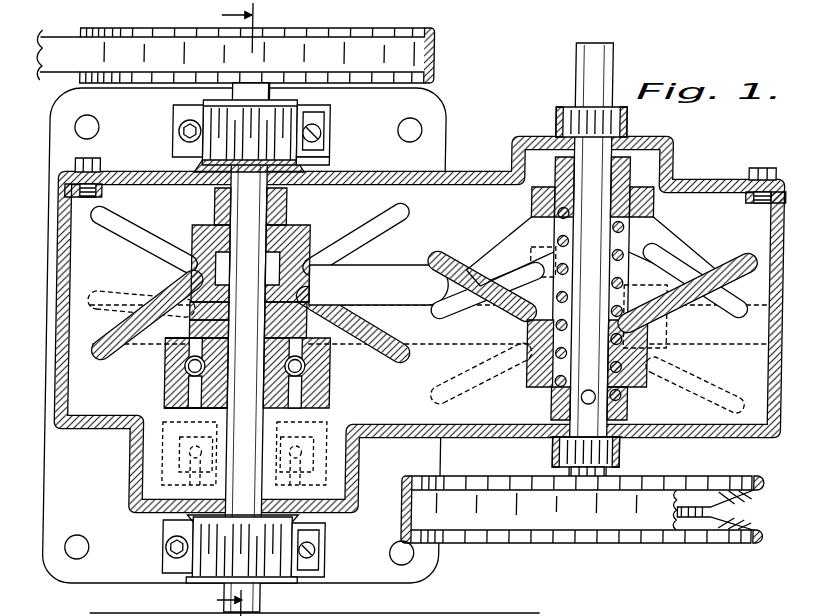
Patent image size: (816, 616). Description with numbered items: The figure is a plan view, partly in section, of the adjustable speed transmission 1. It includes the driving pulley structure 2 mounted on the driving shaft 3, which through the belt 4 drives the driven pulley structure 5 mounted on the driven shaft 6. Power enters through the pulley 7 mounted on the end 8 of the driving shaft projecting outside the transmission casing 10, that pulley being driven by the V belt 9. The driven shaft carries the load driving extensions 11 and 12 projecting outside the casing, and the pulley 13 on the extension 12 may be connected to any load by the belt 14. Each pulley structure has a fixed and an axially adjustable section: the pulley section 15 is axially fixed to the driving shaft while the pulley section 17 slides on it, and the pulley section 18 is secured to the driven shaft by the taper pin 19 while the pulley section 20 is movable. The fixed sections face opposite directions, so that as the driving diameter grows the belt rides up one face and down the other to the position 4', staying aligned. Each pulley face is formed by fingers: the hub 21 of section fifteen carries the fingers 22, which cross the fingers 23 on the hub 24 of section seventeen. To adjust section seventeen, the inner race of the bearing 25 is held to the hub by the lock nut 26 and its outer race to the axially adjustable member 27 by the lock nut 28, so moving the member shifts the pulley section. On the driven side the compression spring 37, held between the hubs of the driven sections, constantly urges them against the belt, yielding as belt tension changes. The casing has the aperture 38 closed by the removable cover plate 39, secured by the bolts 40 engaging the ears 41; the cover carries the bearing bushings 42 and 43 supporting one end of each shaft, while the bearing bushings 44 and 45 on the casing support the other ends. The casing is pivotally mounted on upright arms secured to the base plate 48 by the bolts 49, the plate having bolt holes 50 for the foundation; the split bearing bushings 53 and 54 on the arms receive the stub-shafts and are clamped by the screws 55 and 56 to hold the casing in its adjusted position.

The adjustable speed transmission 1 is at (462, 198).
The driving pulley structure 2 is at (97, 272).
The driving shaft 3 is at (286, 209).
The belt 4 is at (377, 282).
The belt position 4' is at (474, 373).
The driven pulley structure 5 is at (766, 298).
The driven shaft 6 is at (621, 390).
The pulley 7 is at (430, 80).
The end of driving shaft 8 is at (232, 94).
The V belt 9 is at (430, 63).
The transmission casing 10 is at (56, 392).
The load driving extension 11 is at (574, 76).
The load driving extension 12 is at (610, 478).
The pulley 13 is at (763, 540).
The belt 14 is at (592, 538).
The pulley section 15 is at (92, 352).
The pulley section 17 is at (111, 207).
The pulley section 18 is at (745, 252).
The taper pin 19 is at (582, 397).
The pulley section 20 is at (740, 318).
The hub 21 is at (213, 204).
The fingers 22 is at (166, 289).
The fingers 23 is at (168, 265).
The hub 24 is at (168, 348).
The bearing 25 is at (166, 381).
The lock nut 26 is at (292, 416).
The axially adjustable member 27 is at (326, 371).
The lock nut 28 is at (186, 401).
The compression spring 37 is at (615, 254).
The aperture 38 is at (726, 196).
The cover plate 39 is at (374, 172).
The bolts 40 is at (95, 157).
The ears 41 is at (100, 185).
The bearing bushing 42 is at (327, 163).
The bearing bushing 43 is at (626, 127).
The bearing bushing 44 is at (165, 524).
The bearing bushing 45 is at (556, 446).
The base plate 48 is at (60, 490).
The bolts 49 is at (180, 128).
The bolt holes 50 is at (72, 555).
The bearing bushing 53 is at (300, 106).
The bearing bushing 54 is at (195, 583).
The screw 55 is at (320, 134).
The screw 56 is at (324, 553).